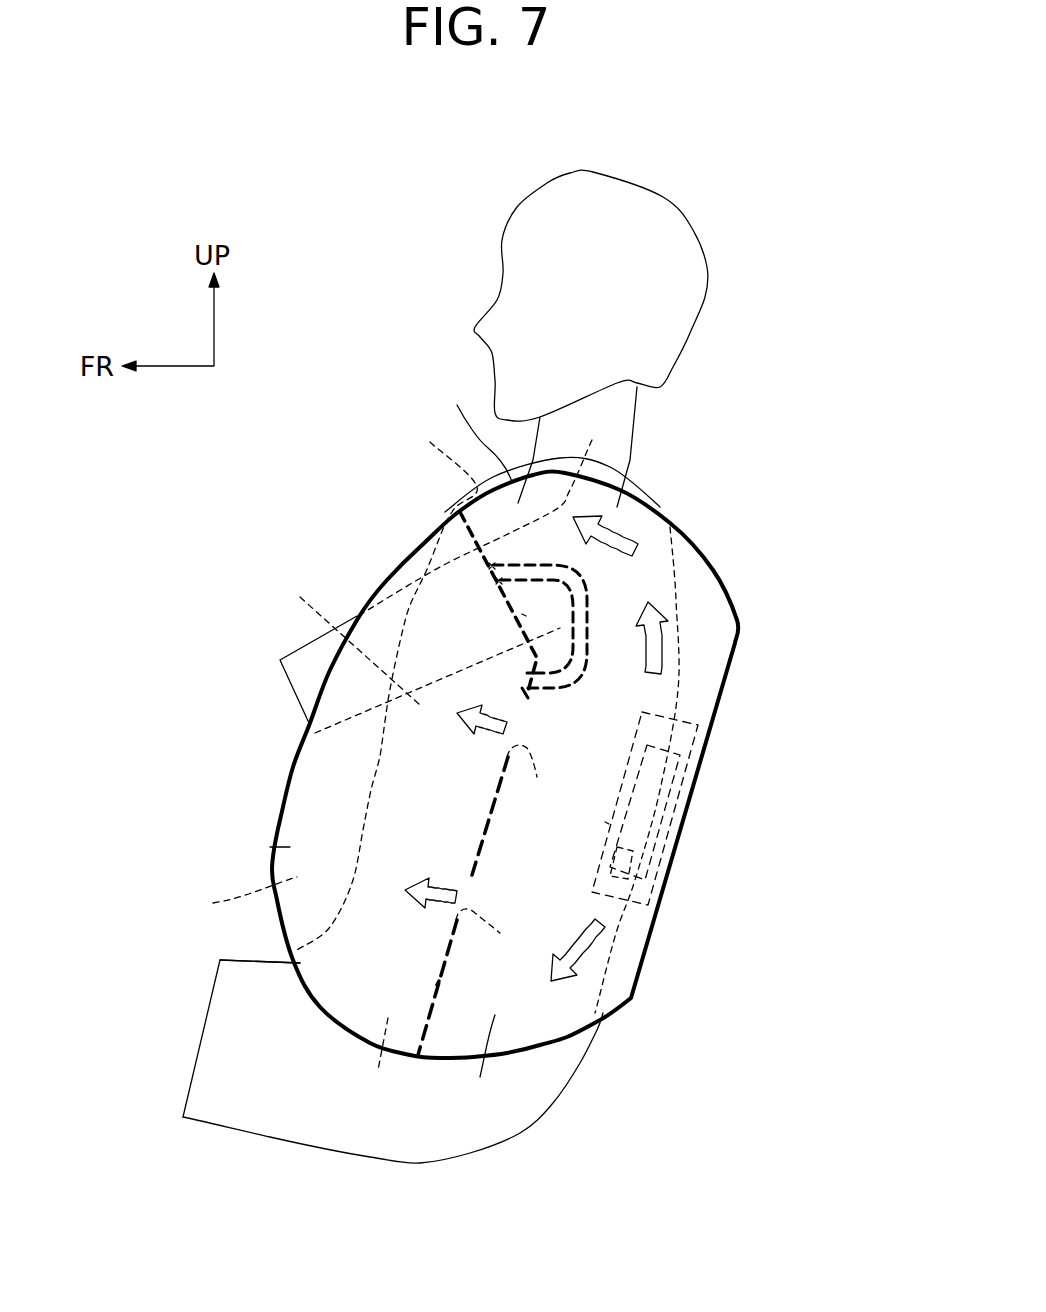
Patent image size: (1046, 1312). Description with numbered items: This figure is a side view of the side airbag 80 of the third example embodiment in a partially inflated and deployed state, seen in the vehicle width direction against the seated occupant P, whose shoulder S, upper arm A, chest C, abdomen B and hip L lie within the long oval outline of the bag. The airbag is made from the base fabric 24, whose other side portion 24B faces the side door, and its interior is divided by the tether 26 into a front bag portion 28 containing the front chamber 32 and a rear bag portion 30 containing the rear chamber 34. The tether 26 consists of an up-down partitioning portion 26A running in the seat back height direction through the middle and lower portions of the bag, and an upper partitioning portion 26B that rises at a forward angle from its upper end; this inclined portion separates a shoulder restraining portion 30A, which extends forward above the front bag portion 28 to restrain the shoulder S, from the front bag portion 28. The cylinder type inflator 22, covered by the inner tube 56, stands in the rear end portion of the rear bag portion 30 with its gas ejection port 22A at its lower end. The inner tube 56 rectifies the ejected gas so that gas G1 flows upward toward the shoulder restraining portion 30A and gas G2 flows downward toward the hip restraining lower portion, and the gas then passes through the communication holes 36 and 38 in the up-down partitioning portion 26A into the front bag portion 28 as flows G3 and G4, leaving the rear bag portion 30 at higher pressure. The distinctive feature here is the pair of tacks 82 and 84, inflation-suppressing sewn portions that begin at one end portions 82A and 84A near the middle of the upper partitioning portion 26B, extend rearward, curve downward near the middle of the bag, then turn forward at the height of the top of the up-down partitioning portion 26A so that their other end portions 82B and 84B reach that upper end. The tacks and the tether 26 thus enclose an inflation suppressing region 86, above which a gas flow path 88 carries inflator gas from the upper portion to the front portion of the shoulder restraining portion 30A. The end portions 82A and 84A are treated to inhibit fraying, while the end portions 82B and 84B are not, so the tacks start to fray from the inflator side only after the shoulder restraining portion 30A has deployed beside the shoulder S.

The seated occupant P is at (593, 172).
The shoulder S is at (482, 510).
The upper arm A is at (280, 660).
The abdomen B is at (377, 827).
The chest C is at (352, 637).
The hip L is at (375, 1058).
The gas G1 is at (627, 527).
The gas G2 is at (592, 946).
The gas flow G3 is at (462, 727).
The gas flow G4 is at (412, 904).
The inflator 22 is at (677, 803).
The gas ejection port 22A is at (655, 868).
The base fabric 24 is at (327, 972).
The other side portion of the base fabric 24B is at (260, 961).
The tether 26 is at (492, 811).
The up-down partitioning portion 26A is at (437, 980).
The upper partitioning portion 26B is at (387, 682).
The front bag portion 28 is at (272, 847).
The rear bag portion 30 is at (476, 1061).
The shoulder restraining portion 30A is at (472, 428).
The front chamber 32 is at (237, 904).
The rear chamber 34 is at (540, 1017).
The communication hole 36 is at (544, 767).
The communication hole 38 is at (496, 930).
The inner tube 56 is at (607, 823).
The side airbag 80 is at (293, 770).
The tack 82 is at (588, 640).
The one end portion of the tack 82A is at (498, 582).
The other end portion of the tack 82B is at (530, 676).
The tack 84 is at (587, 637).
The one end portion of the tack 84A is at (490, 566).
The other end portion of the tack 84B is at (525, 693).
The inflation suppressing region 86 is at (525, 616).
The gas flow path 88 is at (637, 475).